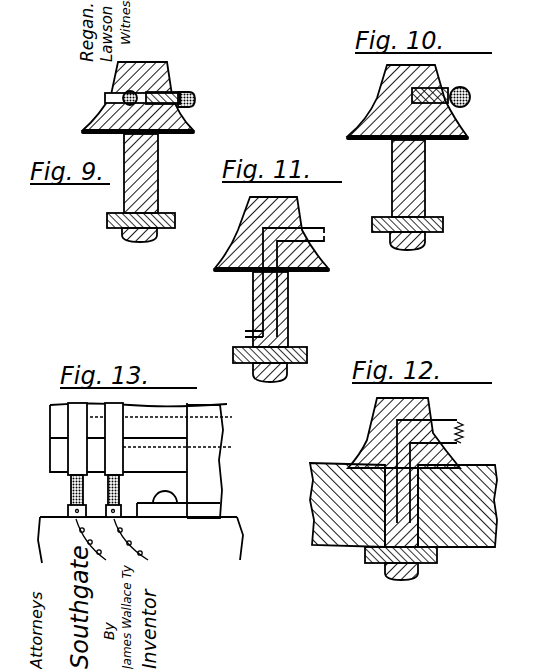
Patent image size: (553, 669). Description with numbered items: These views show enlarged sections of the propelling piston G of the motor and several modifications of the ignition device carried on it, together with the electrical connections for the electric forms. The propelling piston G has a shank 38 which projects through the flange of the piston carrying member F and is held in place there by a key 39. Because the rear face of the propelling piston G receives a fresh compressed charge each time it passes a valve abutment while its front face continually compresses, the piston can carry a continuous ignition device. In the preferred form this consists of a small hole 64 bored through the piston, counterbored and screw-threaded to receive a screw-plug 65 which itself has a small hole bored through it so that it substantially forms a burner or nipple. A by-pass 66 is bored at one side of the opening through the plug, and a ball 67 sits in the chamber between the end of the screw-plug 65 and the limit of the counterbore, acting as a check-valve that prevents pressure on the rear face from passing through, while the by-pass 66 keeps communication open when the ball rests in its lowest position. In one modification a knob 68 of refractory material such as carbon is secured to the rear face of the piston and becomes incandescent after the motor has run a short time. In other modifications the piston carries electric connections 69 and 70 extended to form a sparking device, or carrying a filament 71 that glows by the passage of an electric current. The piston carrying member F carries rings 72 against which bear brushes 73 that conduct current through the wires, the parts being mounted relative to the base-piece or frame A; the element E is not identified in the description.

In FIG. 9, the shank 38 is at (143, 242).
In FIG. 9, the key 39 is at (108, 228).
In FIG. 9, the hole 64 is at (118, 97).
In FIG. 9, the screw-plug 65 is at (173, 90).
In FIG. 9, the by-pass 66 is at (160, 134).
In FIG. 9, the ball 67 is at (143, 62).
In FIG. 9, the propelling piston G is at (160, 62).
In FIG. 10, the knob 68 is at (471, 97).
In FIG. 11, the electric connection 69 is at (323, 227).
In FIG. 11, the electric connection 70 is at (325, 240).
In FIG. 12, the filament 71 is at (463, 419).
In FIG. 13, the rings 72 is at (112, 410).
In FIG. 13, the brushes 73 is at (108, 493).
In FIG. 13, the board E is at (167, 460).
In FIG. 13, the base-piece or frame A is at (140, 527).
In FIG. 12, the piston carrying member F is at (470, 541).